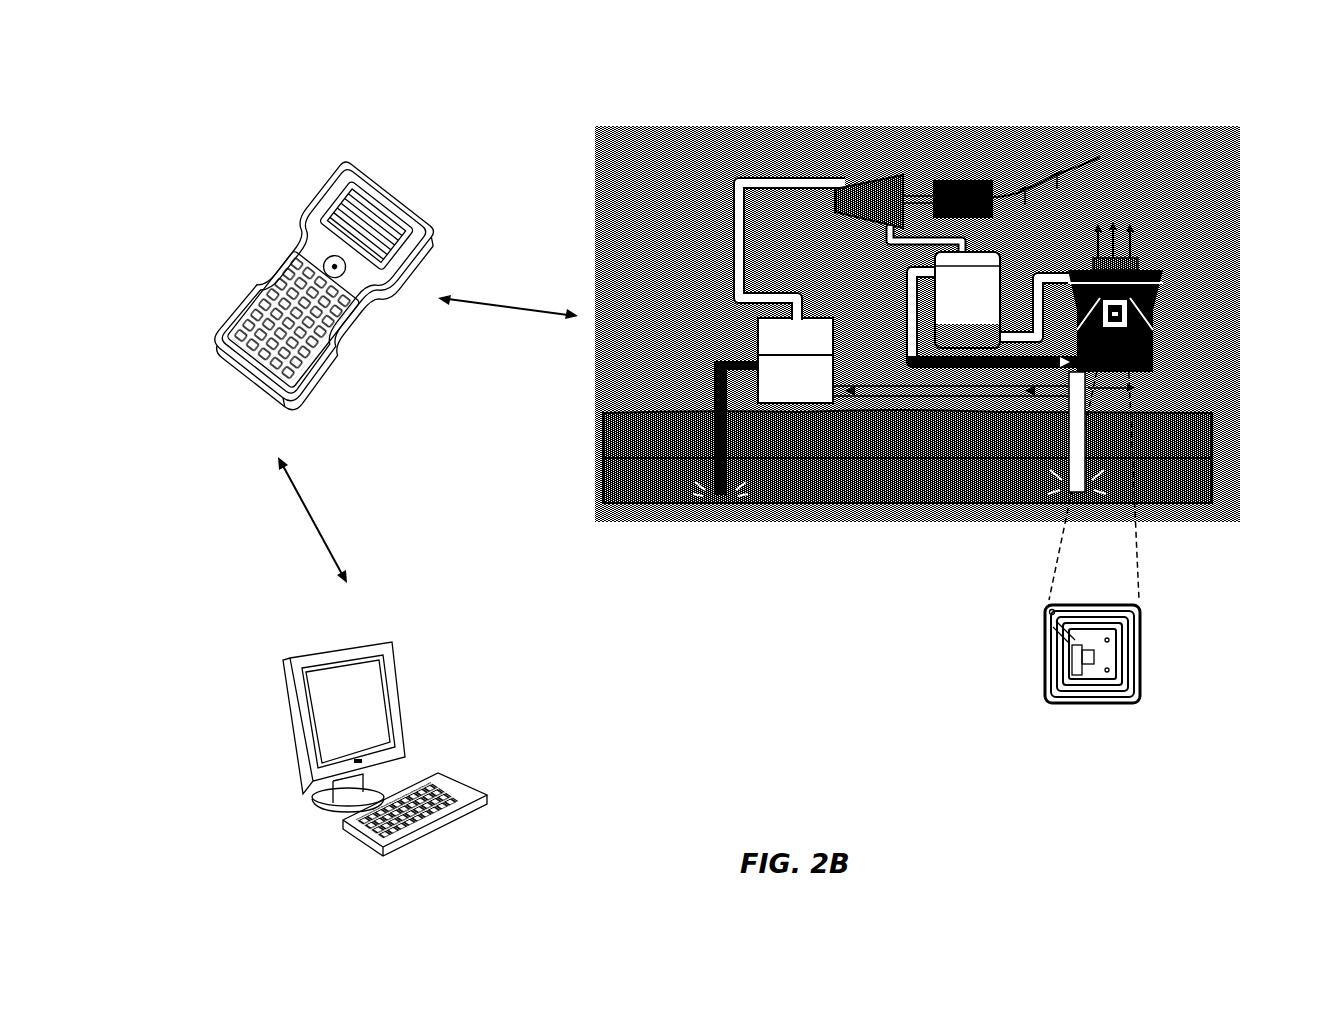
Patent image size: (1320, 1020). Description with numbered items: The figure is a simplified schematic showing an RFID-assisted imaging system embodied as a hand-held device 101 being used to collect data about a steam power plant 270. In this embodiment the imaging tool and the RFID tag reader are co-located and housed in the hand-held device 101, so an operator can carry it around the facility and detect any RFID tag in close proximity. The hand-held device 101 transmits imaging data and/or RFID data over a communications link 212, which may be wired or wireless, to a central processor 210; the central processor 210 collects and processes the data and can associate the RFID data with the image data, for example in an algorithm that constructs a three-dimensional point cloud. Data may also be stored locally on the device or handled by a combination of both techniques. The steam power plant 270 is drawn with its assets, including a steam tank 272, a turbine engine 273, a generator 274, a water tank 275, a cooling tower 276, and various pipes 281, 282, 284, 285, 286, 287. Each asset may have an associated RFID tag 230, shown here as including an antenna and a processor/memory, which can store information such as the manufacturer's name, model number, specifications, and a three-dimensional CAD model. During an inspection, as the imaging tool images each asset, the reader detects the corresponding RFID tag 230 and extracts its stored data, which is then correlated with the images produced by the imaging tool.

The hand-held device 101 is at (343, 172).
The communications link 212 is at (294, 520).
The central processor 210 is at (333, 667).
The RFID tag 230 is at (1145, 662).
The steam power plant 270 is at (905, 96).
The steam tank 272 is at (758, 324).
The turbine engine 273 is at (888, 189).
The generator 274 is at (963, 189).
The water tank 275 is at (988, 264).
The cooling tower 276 is at (1152, 293).
The pipe 281 is at (714, 399).
The pipe 282 is at (735, 237).
The pipe 284 is at (912, 306).
The pipe 285 is at (1054, 280).
The pipe 286 is at (890, 394).
The pipe 287 is at (1068, 446).